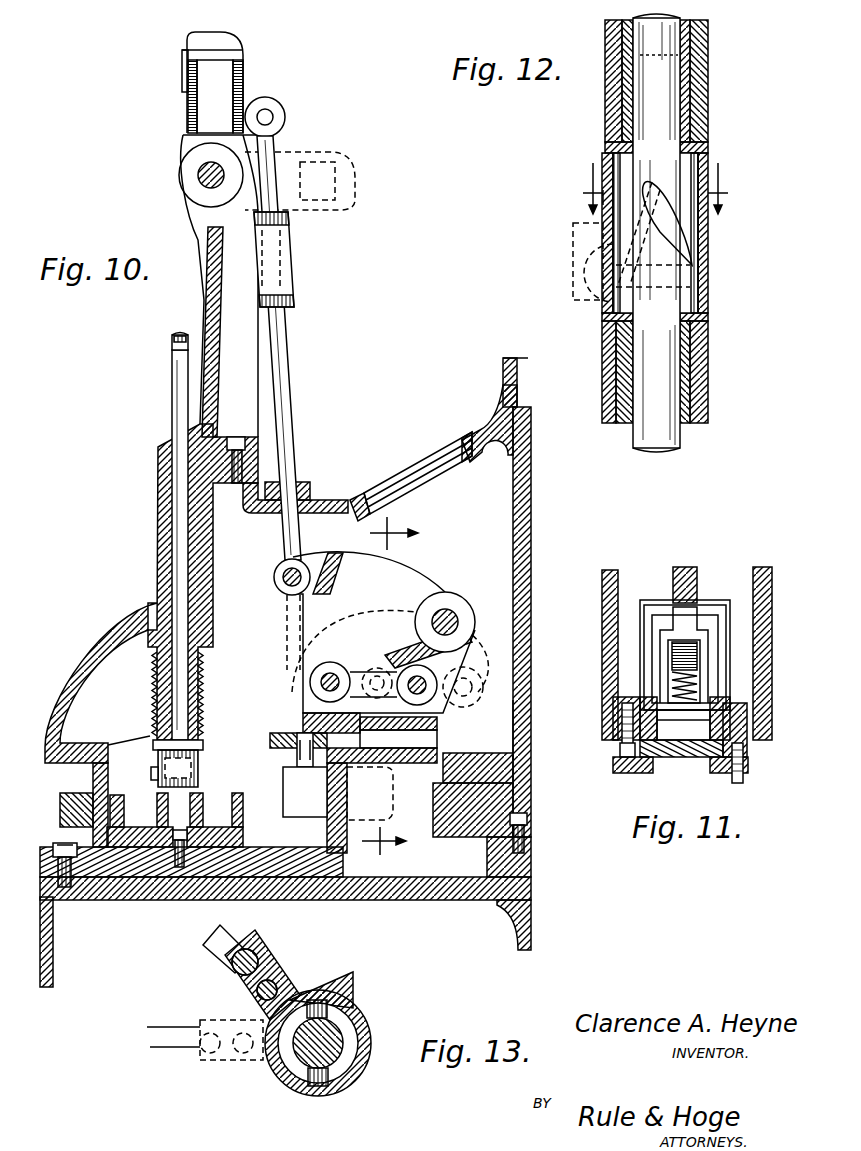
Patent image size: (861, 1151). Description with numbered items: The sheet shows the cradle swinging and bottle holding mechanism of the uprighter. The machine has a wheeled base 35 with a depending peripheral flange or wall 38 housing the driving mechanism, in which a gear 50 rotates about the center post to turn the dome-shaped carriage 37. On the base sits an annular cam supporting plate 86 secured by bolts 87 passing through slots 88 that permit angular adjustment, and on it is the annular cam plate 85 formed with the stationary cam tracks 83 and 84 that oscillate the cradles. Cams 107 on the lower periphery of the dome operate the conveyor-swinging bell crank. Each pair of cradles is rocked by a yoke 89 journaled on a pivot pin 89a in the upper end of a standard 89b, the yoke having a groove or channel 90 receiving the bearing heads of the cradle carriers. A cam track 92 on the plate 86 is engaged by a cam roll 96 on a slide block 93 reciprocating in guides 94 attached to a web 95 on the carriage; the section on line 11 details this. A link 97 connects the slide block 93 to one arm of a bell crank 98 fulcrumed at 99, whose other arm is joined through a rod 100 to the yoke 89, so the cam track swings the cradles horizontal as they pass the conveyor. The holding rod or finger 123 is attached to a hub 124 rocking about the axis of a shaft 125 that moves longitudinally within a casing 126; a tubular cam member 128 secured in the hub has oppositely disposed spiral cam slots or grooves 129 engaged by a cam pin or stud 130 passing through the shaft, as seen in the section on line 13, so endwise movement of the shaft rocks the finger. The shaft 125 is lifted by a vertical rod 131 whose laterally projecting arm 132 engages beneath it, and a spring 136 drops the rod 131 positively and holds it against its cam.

In FIG. 10, the groove or channel 90 is at (232, 72).
In FIG. 10, the yoke 89 is at (186, 118).
In FIG. 10, the pivot pin 89a is at (204, 175).
In FIG. 10, the standard 89b is at (212, 308).
In FIG. 10, the laterally projecting arm 132 is at (180, 352).
In FIG. 10, the vertical rod 131 is at (180, 405).
In FIG. 10, the rod 100 is at (290, 345).
In FIG. 10, the carriage 37 is at (352, 500).
In FIG. 10, the section line 11 is at (364, 542).
In FIG. 10, the bell crank 98 is at (410, 580).
In FIG. 11, the bell crank 98 is at (697, 575).
In FIG. 10, the fulcrum 99 is at (450, 616).
In FIG. 10, the link 97 is at (372, 680).
In FIG. 11, the link 97 is at (668, 690).
In FIG. 10, the spring 136 is at (155, 697).
In FIG. 10, the cams 107 is at (70, 793).
In FIG. 10, the cam track 84 is at (125, 808).
In FIG. 10, the cam track 83 is at (200, 808).
In FIG. 10, the cam roll 96 is at (298, 775).
In FIG. 10, the slide block 93 is at (417, 738).
In FIG. 11, the slide block 93 is at (680, 753).
In FIG. 10, the web 95 is at (524, 740).
In FIG. 11, the web 95 is at (771, 610).
In FIG. 10, the cam track 92 is at (382, 790).
In FIG. 10, the guides 94 is at (428, 752).
In FIG. 11, the guides 94 is at (750, 748).
In FIG. 10, the bolts 87 is at (58, 845).
In FIG. 10, the slots 88 is at (53, 851).
In FIG. 10, the gear 50 is at (465, 828).
In FIG. 10, the annular cam plate 85 is at (178, 866).
In FIG. 10, the annular cam supporting plate 86 is at (280, 868).
In FIG. 10, the wheeled base 35 is at (368, 902).
In FIG. 10, the depending peripheral flange or wall 38 is at (55, 977).
In FIG. 13, the holding rod or finger 123 is at (217, 950).
In FIG. 13, the hub 124 is at (350, 1017).
In FIG. 12, the hub 124 is at (603, 198).
In FIG. 13, the shaft 125 is at (292, 1063).
In FIG. 12, the shaft 125 is at (676, 433).
In FIG. 13, the tubular cam member 128 is at (350, 1073).
In FIG. 12, the tubular cam member 128 is at (694, 197).
In FIG. 13, the cam pin or stud 130 is at (307, 1087).
In FIG. 12, the cam pin or stud 130 is at (660, 282).
In FIG. 12, the casing 126 is at (706, 98).
In FIG. 12, the spiral cam slots or grooves 129 is at (700, 237).
In FIG. 12, the section line 13 is at (651, 180).